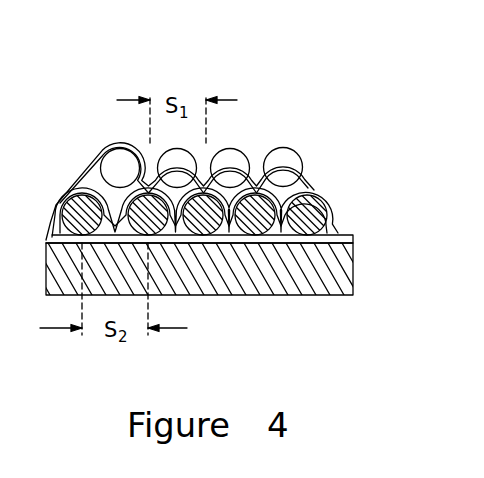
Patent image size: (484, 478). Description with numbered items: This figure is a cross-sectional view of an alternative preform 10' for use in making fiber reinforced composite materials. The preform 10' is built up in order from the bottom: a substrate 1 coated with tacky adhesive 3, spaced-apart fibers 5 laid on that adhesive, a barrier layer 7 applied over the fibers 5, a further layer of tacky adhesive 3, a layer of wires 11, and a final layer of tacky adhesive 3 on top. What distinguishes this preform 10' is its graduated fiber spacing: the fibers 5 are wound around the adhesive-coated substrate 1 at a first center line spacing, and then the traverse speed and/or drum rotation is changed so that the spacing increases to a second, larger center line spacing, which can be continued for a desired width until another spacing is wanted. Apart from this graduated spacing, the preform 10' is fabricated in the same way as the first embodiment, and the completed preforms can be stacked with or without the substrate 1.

The preform 10' is at (216, 127).
The substrate 1 is at (337, 281).
The fibers 5 is at (352, 237).
The tacky adhesive 3 is at (330, 189).
The barrier layer 7 is at (335, 200).
The wires 11 is at (290, 163).